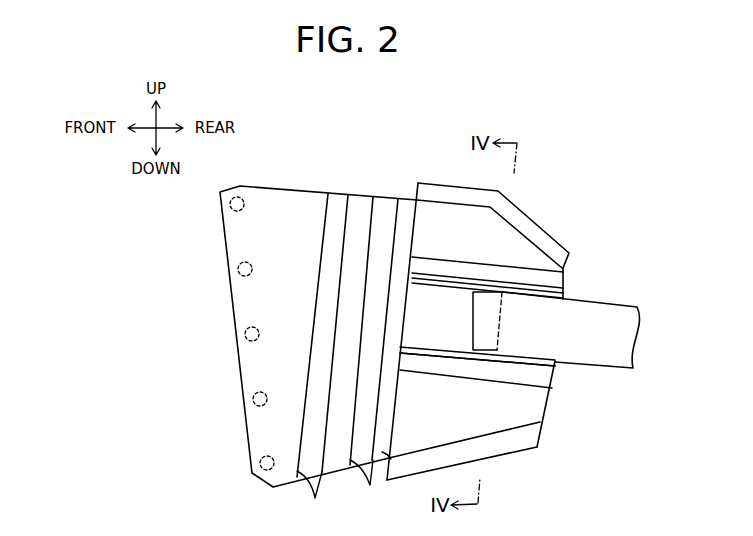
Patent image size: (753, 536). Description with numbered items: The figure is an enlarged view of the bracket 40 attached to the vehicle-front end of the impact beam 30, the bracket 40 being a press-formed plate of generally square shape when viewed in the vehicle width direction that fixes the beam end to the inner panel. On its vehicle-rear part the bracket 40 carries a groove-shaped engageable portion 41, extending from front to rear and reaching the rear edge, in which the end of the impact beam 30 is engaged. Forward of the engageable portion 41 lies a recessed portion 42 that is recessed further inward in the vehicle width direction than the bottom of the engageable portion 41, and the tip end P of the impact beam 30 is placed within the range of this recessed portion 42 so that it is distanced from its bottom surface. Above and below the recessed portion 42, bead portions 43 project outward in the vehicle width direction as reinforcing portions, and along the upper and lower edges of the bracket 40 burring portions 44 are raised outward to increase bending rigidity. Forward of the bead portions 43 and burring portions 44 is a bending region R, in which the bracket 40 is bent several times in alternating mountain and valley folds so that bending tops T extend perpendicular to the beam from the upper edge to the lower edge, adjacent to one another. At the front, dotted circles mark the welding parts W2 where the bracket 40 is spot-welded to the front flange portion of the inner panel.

The impact beam 30 is at (607, 303).
The bracket 40 is at (549, 478).
The engageable portion 41 is at (543, 364).
The recessed portion 42 is at (456, 282).
The bead portions 43 is at (481, 262).
The burring portions 44 is at (526, 214).
The tip end P is at (473, 318).
The bending region R is at (328, 192).
The bending tops T is at (371, 486).
The welding parts W2 is at (229, 204).